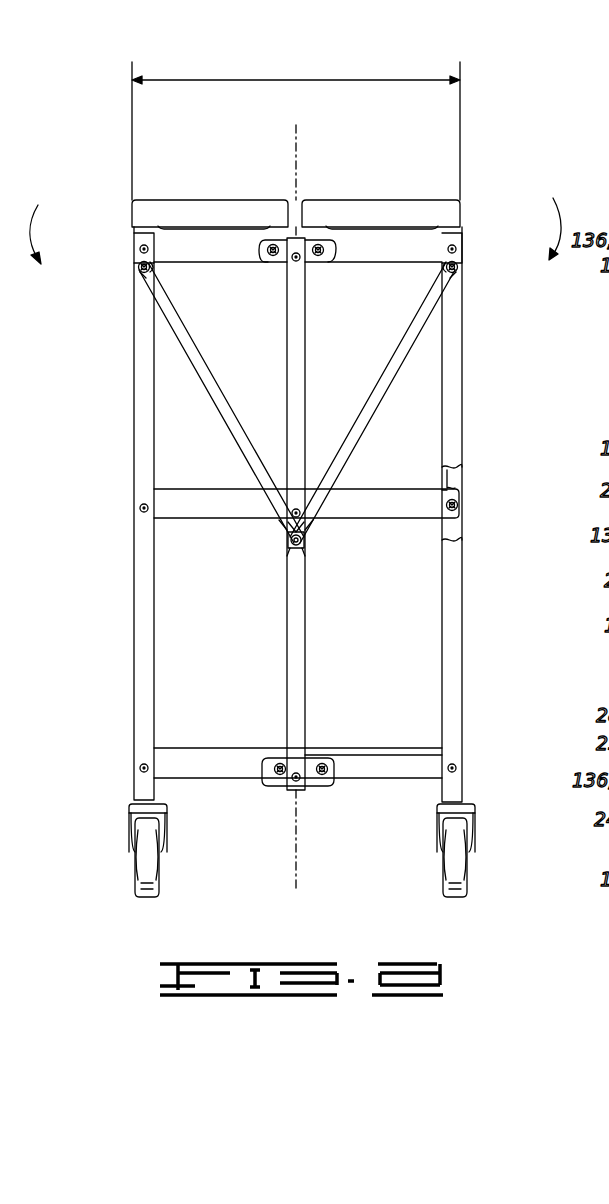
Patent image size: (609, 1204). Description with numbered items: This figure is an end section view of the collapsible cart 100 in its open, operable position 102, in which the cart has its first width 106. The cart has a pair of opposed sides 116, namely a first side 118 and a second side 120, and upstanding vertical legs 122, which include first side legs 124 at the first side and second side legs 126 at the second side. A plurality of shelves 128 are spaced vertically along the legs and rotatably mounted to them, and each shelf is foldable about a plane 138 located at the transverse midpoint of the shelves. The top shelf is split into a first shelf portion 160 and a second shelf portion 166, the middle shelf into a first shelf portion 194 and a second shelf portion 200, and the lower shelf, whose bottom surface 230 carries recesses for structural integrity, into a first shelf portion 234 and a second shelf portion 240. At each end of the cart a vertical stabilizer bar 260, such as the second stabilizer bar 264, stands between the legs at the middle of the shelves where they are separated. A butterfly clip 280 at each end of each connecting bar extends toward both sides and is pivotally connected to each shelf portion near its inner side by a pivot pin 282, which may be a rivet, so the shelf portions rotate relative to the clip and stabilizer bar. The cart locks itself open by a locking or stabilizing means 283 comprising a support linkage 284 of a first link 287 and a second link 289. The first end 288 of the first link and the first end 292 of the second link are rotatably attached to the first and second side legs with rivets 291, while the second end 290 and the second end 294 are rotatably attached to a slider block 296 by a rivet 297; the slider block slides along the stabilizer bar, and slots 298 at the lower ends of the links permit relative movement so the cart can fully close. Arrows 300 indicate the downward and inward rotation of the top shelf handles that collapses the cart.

The collapsible cart 100 is at (479, 93).
The open position 102 is at (300, 462).
The first width 106 is at (309, 79).
The opposed sides 116 is at (302, 514).
The first side 118 is at (506, 514).
The second side 120 is at (93, 513).
The legs 122 is at (302, 514).
The first side legs 124 is at (465, 583).
The second side legs 126 is at (142, 618).
The shelves 128 is at (306, 456).
The plane 138 is at (295, 151).
The first shelf portion 160 is at (335, 240).
The second shelf portion 166 is at (190, 245).
The first shelf portion 194 is at (430, 505).
The second shelf portion 200 is at (228, 497).
The bottom surface 230 is at (187, 780).
The first shelf portion 234 is at (430, 745).
The second shelf portion 240 is at (205, 760).
The vertical stabilizer bars 260 is at (350, 514).
The second stabilizer bar 264 is at (305, 320).
The butterfly clip 280 is at (273, 258).
The pivot pin 282 is at (272, 244).
The locking or stabilizing means 283 is at (430, 403).
The support linkage 284 is at (430, 403).
The first link 287 is at (405, 352).
The first end 288 is at (462, 284).
The second link 289 is at (205, 383).
The second end 290 is at (304, 548).
The rivets 291 is at (143, 265).
The first end 292 is at (140, 272).
The second end 294 is at (297, 564).
The slider block 296 is at (305, 555).
The rivet 297 is at (290, 555).
The slots 298 is at (290, 530).
The arrows 300 is at (37, 203).